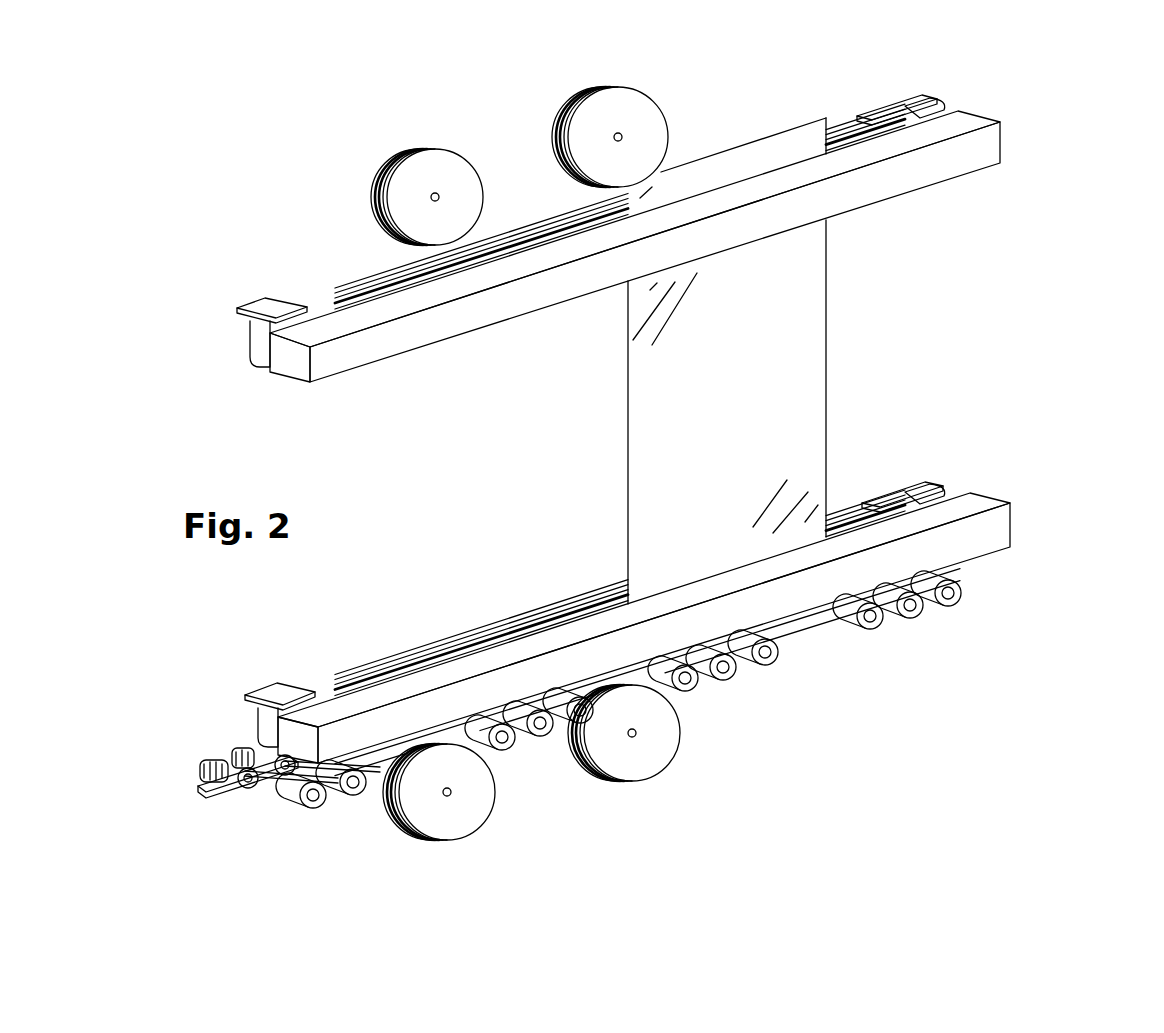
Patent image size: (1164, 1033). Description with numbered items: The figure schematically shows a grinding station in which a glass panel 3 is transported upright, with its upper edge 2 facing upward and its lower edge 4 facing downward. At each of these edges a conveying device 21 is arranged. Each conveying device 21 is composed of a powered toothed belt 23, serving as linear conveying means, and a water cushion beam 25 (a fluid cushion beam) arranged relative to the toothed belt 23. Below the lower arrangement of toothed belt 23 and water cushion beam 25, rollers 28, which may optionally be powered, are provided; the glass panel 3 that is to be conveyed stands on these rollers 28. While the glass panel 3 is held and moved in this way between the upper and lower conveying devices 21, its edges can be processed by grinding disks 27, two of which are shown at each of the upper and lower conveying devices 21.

The upper edge 2 is at (708, 124).
The glass panel 3 is at (805, 378).
The lower edge 4 is at (778, 635).
The conveying device 21 is at (696, 427).
The toothed belt 23 is at (262, 335).
The water cushion beam 25 is at (943, 165).
The grinding disk 27 is at (600, 122).
The rollers 28 is at (882, 630).